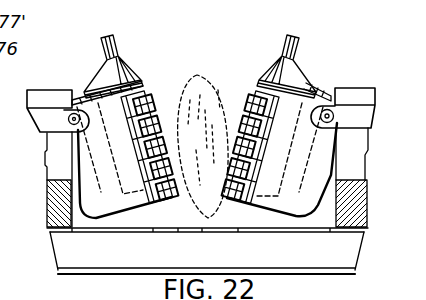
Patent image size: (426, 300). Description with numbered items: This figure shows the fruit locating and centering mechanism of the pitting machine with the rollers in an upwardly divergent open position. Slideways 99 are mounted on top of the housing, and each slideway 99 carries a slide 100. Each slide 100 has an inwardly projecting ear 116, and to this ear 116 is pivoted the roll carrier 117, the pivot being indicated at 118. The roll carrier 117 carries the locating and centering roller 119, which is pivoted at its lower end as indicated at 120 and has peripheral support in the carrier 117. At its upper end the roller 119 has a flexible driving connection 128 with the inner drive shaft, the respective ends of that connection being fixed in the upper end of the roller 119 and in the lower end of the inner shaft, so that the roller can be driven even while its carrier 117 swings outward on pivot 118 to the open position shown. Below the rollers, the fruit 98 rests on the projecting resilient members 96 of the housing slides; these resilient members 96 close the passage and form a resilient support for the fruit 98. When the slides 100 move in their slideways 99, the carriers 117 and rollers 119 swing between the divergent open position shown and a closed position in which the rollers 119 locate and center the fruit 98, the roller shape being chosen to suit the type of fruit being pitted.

The flexible driving connection 128 is at (116, 29).
The locating and centering roller 119 is at (150, 88).
The pivot 118 is at (79, 100).
The inwardly projecting ear 116 is at (52, 112).
The roll carrier 117 is at (101, 163).
The slideways 99 is at (54, 206).
The slide 100 is at (366, 146).
The pivot 120 is at (207, 245).
The resilient member 96 is at (146, 230).
The fruit 98 is at (200, 72).